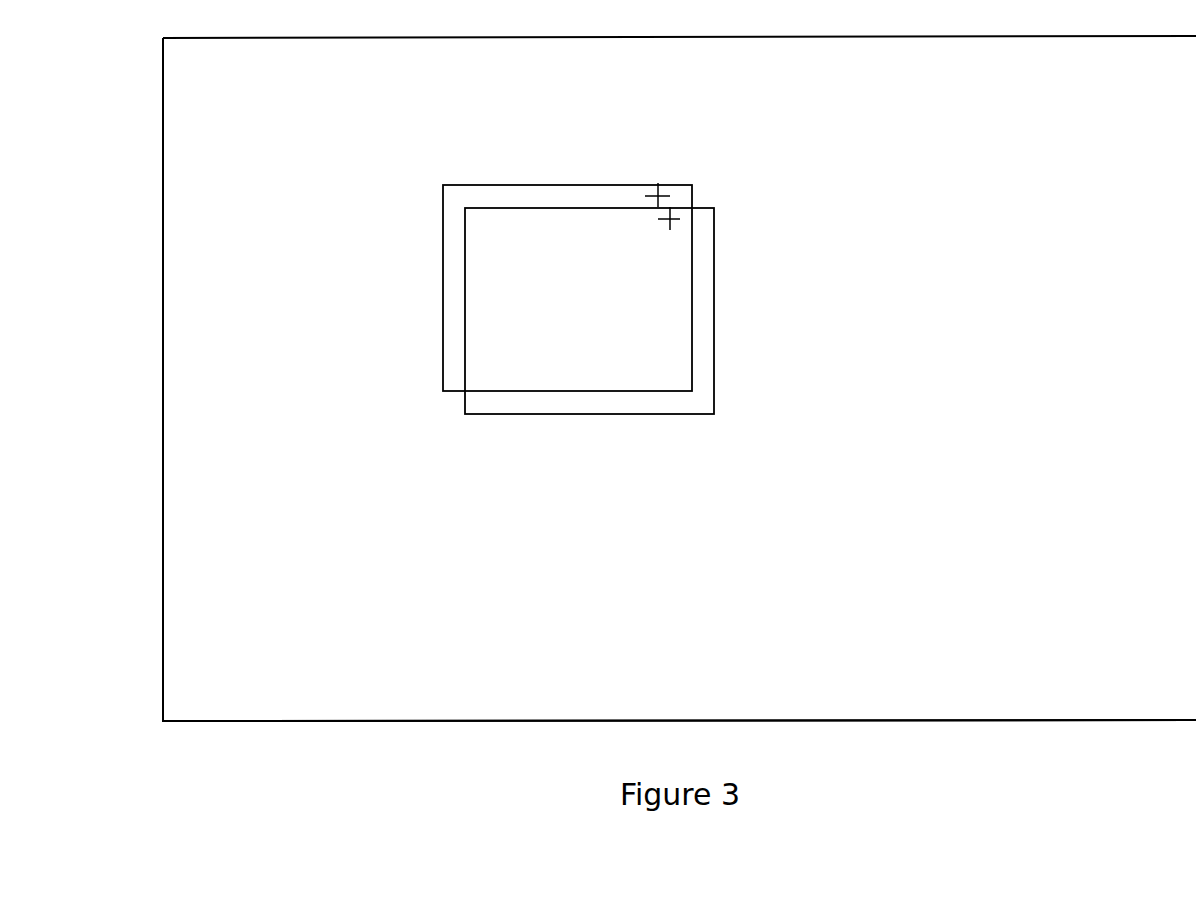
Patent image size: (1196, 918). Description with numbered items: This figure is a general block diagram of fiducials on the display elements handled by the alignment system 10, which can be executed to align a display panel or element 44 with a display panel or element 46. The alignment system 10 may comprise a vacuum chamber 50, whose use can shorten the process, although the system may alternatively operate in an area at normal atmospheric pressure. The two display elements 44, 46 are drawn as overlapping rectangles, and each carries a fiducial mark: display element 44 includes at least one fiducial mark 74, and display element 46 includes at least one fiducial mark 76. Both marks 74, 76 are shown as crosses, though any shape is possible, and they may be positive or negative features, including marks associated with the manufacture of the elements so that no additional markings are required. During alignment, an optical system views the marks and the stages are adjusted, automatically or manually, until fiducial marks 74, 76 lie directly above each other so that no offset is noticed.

The alignment system 10 is at (863, 731).
The vacuum chamber 50 is at (398, 721).
The display element 46 is at (477, 185).
The display element 44 is at (465, 219).
The fiducial mark 76 is at (662, 190).
The fiducial mark 74 is at (677, 212).